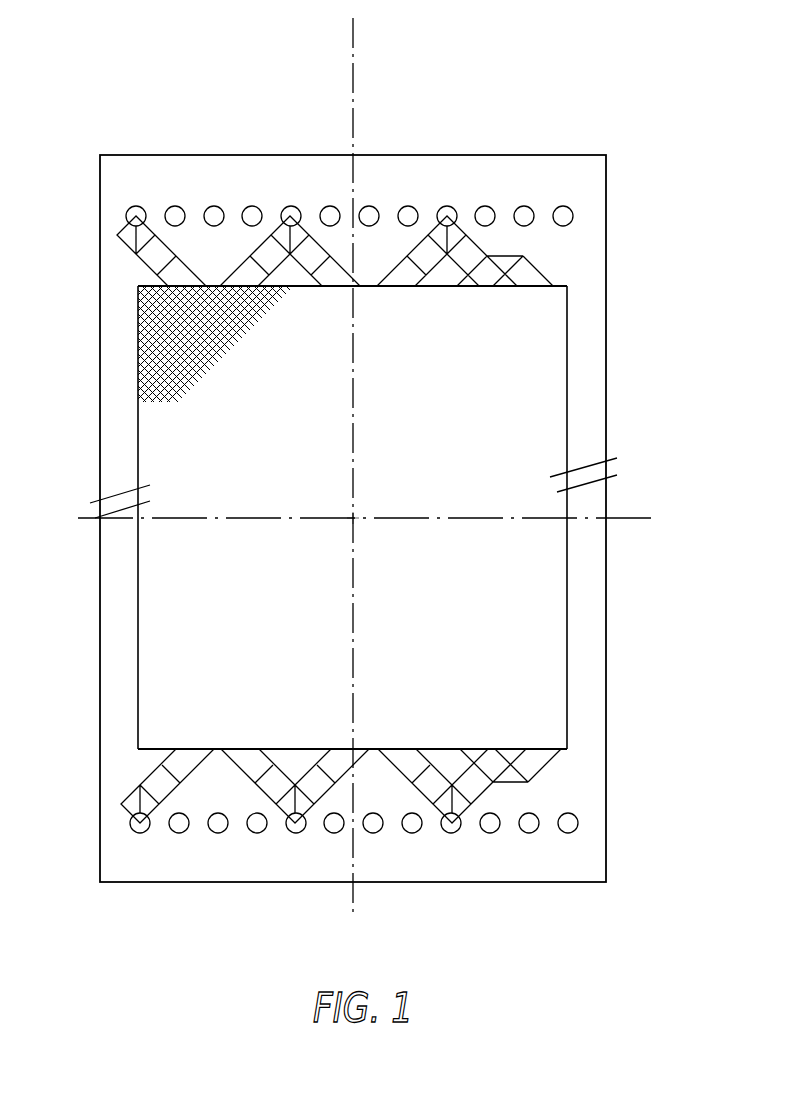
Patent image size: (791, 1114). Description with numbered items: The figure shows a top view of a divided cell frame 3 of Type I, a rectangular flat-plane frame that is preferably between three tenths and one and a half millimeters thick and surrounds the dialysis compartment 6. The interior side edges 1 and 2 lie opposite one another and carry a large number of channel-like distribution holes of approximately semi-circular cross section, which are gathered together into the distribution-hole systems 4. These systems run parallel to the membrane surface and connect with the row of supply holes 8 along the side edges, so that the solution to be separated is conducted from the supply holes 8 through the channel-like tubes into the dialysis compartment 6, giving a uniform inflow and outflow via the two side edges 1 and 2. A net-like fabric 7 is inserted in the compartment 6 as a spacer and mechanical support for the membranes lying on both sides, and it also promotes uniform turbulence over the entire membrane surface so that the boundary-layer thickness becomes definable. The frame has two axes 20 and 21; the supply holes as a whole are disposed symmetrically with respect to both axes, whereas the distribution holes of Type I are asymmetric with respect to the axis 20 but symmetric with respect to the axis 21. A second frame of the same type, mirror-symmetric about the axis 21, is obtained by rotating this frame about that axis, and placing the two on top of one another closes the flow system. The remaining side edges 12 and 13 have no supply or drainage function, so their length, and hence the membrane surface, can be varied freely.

The interior side edge 1 is at (371, 289).
The interior side edge 2 is at (370, 750).
The cell frame 3 is at (548, 177).
The distribution-hole system 4 is at (443, 272).
The dialysis compartment 6 is at (353, 518).
The net-like fabric 7 is at (192, 385).
The supply hole 8 is at (440, 210).
The side edge 12 is at (138, 460).
The side edge 13 is at (567, 553).
The axis 20 is at (352, 73).
The axis 21 is at (642, 517).